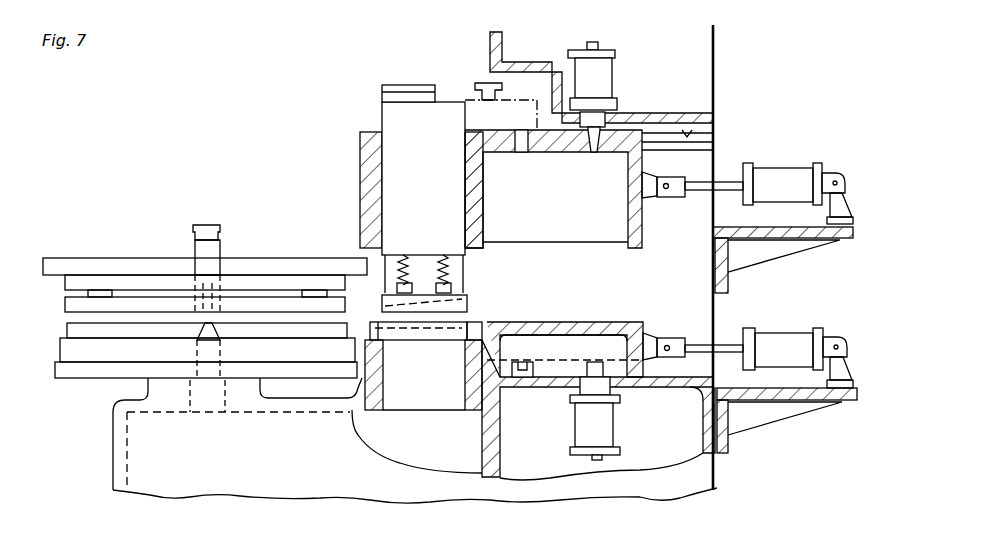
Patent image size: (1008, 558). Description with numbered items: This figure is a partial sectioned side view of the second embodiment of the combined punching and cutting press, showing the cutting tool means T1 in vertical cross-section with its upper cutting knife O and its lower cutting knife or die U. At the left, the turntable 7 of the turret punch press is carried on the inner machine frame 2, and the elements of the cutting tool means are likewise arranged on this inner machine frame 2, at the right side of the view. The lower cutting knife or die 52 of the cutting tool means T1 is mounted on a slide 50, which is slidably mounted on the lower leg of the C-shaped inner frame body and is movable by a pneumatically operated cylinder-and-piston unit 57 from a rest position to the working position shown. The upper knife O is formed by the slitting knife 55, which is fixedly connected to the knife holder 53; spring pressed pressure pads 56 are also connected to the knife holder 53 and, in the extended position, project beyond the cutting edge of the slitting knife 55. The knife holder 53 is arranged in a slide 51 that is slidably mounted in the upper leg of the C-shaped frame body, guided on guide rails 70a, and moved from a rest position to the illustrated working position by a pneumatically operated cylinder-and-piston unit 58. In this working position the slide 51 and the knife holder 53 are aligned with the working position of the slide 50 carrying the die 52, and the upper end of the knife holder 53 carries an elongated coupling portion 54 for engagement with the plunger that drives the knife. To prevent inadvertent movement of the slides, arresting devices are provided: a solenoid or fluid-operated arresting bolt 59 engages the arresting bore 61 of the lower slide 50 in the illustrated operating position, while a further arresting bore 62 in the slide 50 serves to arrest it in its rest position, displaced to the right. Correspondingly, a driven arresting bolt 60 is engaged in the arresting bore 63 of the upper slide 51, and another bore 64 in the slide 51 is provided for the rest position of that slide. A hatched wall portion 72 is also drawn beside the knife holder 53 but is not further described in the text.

The inner machine frame 2 is at (170, 458).
The turntable 7 is at (100, 265).
The slide 50 is at (633, 368).
The slide 51 is at (630, 135).
The lower cutting knife or die 52 is at (380, 332).
The knife holder 53 is at (397, 122).
The coupling portion 54 is at (420, 85).
The slitting knife 55 is at (393, 270).
The spring pressed pressure pads 56 is at (392, 300).
The cylinder-and-piston unit 57 is at (794, 348).
The cylinder-and-piston unit 58 is at (770, 177).
The arresting bolt 59 is at (587, 433).
The arresting bolt 60 is at (605, 63).
The arresting bore 61 is at (595, 362).
The arresting bore 62 is at (520, 377).
The arresting bore 63 is at (593, 152).
The bore 64 is at (517, 152).
The guide rails 70a is at (713, 110).
The guide wall 72 is at (362, 145).
The upper cutting knife o is at (457, 263).
The lower cutting knife or die u is at (467, 327).
The cutting tool means T1 is at (453, 435).